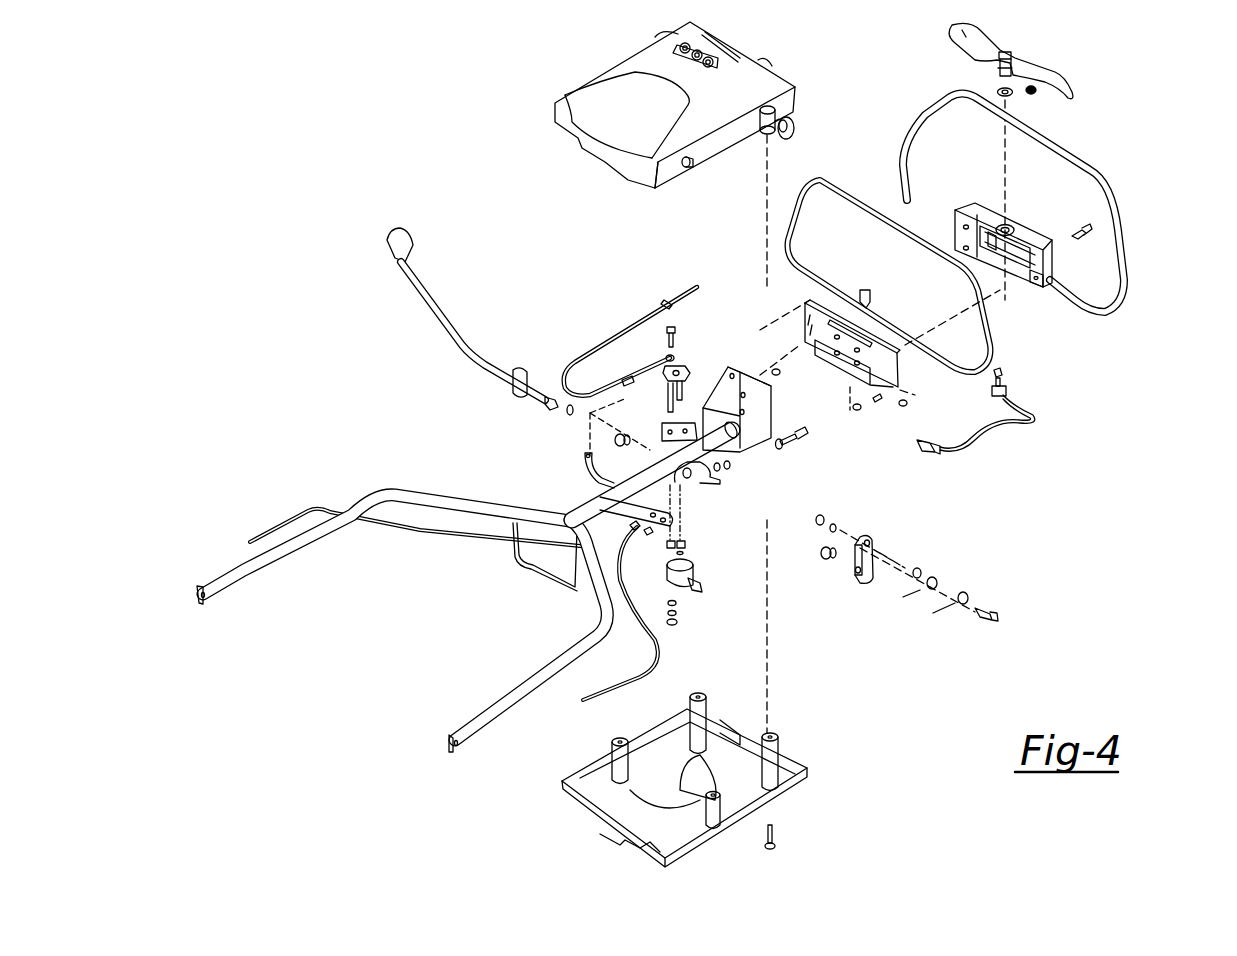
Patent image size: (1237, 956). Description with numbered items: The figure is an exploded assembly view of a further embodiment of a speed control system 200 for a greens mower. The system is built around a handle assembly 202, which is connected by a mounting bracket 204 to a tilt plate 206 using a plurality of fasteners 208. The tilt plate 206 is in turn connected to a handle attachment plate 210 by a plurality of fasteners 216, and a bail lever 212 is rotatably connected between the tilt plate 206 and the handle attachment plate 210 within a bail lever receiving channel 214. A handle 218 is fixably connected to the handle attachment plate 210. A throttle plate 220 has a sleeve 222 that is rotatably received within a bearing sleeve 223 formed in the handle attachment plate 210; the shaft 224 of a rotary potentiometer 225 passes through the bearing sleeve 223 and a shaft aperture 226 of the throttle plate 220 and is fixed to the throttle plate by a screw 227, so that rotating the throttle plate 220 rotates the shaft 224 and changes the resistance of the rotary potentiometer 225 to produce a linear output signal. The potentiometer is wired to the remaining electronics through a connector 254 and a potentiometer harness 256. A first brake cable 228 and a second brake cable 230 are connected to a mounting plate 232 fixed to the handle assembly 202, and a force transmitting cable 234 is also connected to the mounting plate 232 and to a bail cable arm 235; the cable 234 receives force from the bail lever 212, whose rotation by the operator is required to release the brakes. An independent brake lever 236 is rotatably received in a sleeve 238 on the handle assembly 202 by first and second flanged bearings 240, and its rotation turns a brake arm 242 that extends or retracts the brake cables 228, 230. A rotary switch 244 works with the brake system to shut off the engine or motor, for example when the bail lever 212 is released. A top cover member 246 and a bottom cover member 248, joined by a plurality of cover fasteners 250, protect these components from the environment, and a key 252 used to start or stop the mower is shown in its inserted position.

The speed control system 200 is at (1128, 157).
The handle assembly 202 is at (532, 674).
The mounting bracket 204 is at (757, 445).
The tilt plate 206 is at (800, 320).
The fasteners 208 is at (797, 440).
The handle attachment plate 210 is at (1040, 290).
The bail lever 212 is at (853, 195).
The bail lever receiving channel 214 is at (1033, 288).
The fasteners 216 is at (1077, 229).
The handle 218 is at (1126, 243).
The throttle plate 220 is at (950, 30).
The sleeve 222 is at (997, 71).
The bearing sleeve 223 is at (1000, 225).
The shaft 224 is at (1003, 377).
The rotary potentiometer 225 is at (990, 393).
The shaft aperture 226 is at (1007, 50).
The screw 227 is at (1038, 94).
The first brake cable 228 is at (458, 540).
The second brake cable 230 is at (660, 677).
The mounting plate 232 is at (585, 470).
The force transmitting cable 234 is at (667, 303).
The bail cable arm 235 is at (690, 368).
The brake lever 236 is at (488, 360).
The sleeve 238 is at (690, 480).
The flanged bearings 240 is at (633, 437).
The brake arm 242 is at (865, 538).
The rotary switch 244 is at (700, 585).
The top cover member 246 is at (563, 137).
The bottom cover member 248 is at (810, 776).
The cover fasteners 250 is at (780, 836).
The key 252 is at (797, 122).
The connector 254 is at (917, 443).
The potentiometer harness 256 is at (967, 453).